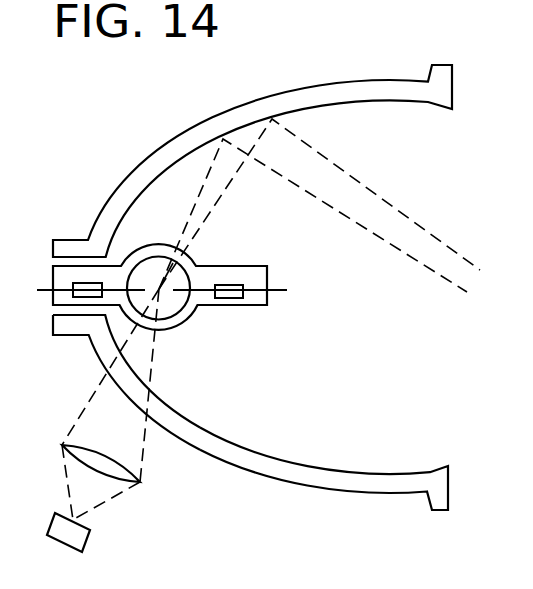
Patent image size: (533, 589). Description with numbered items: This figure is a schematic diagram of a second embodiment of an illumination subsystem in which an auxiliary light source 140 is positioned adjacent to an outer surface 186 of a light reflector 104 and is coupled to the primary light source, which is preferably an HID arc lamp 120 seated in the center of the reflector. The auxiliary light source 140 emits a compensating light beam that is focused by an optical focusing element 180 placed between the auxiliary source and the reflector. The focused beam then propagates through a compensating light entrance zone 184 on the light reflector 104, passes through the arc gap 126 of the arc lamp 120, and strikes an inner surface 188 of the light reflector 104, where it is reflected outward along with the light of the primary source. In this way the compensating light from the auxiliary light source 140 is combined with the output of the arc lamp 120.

The light reflector 104 is at (350, 491).
The HID arc lamp 120 is at (230, 306).
The arc gap 126 is at (161, 291).
The auxiliary light source 140 is at (88, 537).
The optical focusing element 180 is at (140, 482).
The compensating light entrance zone 184 is at (127, 398).
The outer surface 186 is at (388, 81).
The inner surface 188 is at (237, 126).